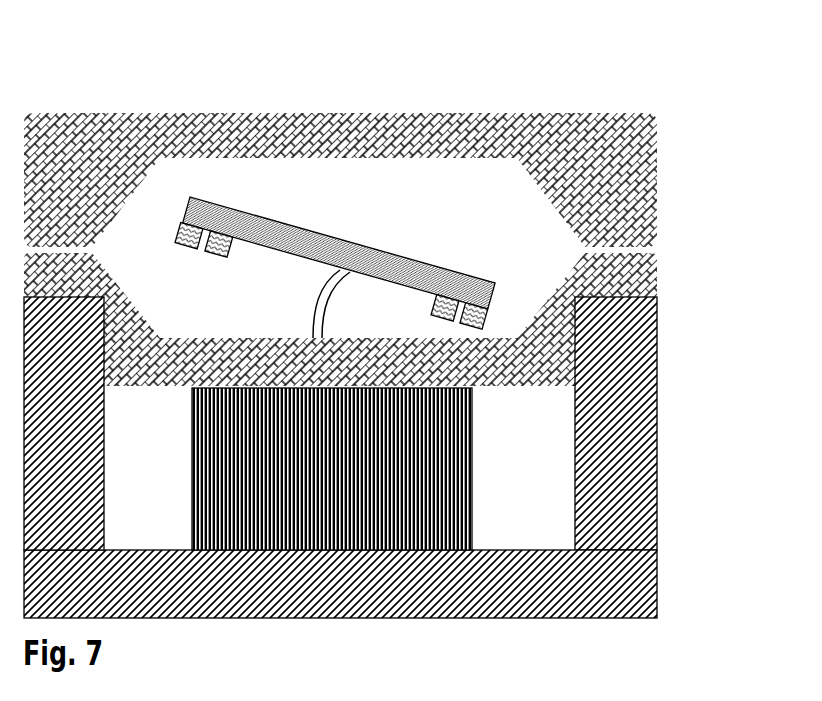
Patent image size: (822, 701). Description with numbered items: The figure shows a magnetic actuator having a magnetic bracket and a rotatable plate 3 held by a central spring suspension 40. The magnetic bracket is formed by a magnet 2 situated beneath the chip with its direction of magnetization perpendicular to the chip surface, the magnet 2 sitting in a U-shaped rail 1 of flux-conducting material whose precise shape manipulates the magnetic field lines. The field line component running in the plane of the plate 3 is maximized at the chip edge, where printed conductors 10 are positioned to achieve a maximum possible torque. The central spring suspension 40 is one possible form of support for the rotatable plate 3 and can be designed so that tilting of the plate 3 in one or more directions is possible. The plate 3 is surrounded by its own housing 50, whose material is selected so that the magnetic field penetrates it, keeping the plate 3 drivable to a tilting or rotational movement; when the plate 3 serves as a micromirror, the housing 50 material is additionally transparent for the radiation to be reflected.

The U-shaped rail 1 is at (95, 453).
The magnet 2 is at (453, 505).
The rotatable plate 3 is at (291, 233).
The printed conductors 10 is at (443, 300).
The central spring suspension 40 is at (335, 331).
The housing 50 is at (425, 115).